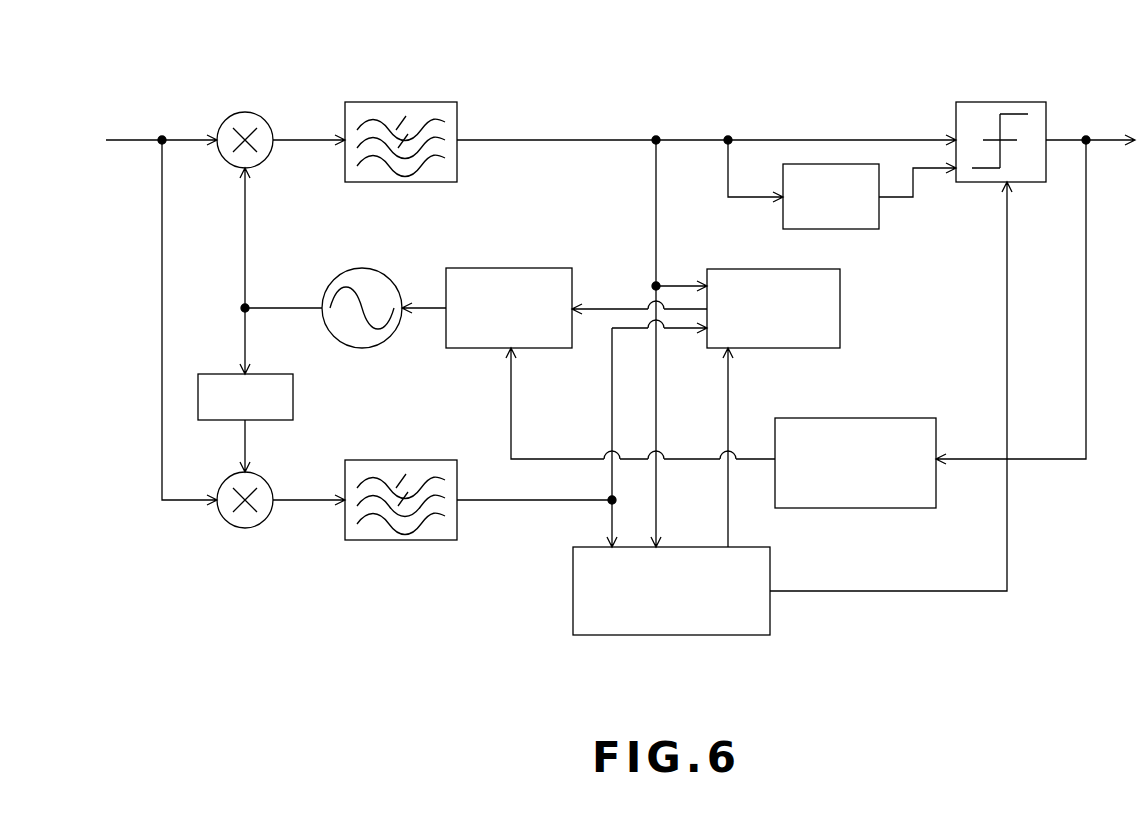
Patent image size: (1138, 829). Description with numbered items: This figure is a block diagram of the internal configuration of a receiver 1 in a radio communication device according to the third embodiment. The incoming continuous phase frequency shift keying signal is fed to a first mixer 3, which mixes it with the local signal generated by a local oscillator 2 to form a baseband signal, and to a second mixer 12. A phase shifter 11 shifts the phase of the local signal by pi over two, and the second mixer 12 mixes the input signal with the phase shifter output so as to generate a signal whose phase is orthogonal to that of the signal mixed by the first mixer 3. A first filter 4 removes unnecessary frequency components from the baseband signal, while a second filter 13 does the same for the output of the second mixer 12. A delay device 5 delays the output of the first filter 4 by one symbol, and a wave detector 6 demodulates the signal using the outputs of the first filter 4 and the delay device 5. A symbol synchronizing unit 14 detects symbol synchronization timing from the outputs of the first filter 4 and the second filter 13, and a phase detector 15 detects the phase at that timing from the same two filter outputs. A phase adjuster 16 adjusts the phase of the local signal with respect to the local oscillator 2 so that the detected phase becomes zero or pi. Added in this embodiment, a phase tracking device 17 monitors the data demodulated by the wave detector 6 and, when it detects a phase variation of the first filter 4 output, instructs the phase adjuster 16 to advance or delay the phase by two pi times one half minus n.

The receiver 1 is at (525, 715).
The local oscillator 2 is at (362, 268).
The first mixer 3 is at (243, 114).
The first filter 4 is at (395, 102).
The delay device 5 is at (843, 229).
The wave detector 6 is at (990, 102).
The phase shifter 11 is at (297, 392).
The second mixer 12 is at (255, 523).
The second filter 13 is at (380, 540).
The symbol synchronizing unit 14 is at (573, 595).
The phase detector 15 is at (843, 308).
The phase adjuster 16 is at (497, 268).
The phase tracking device 17 is at (850, 508).